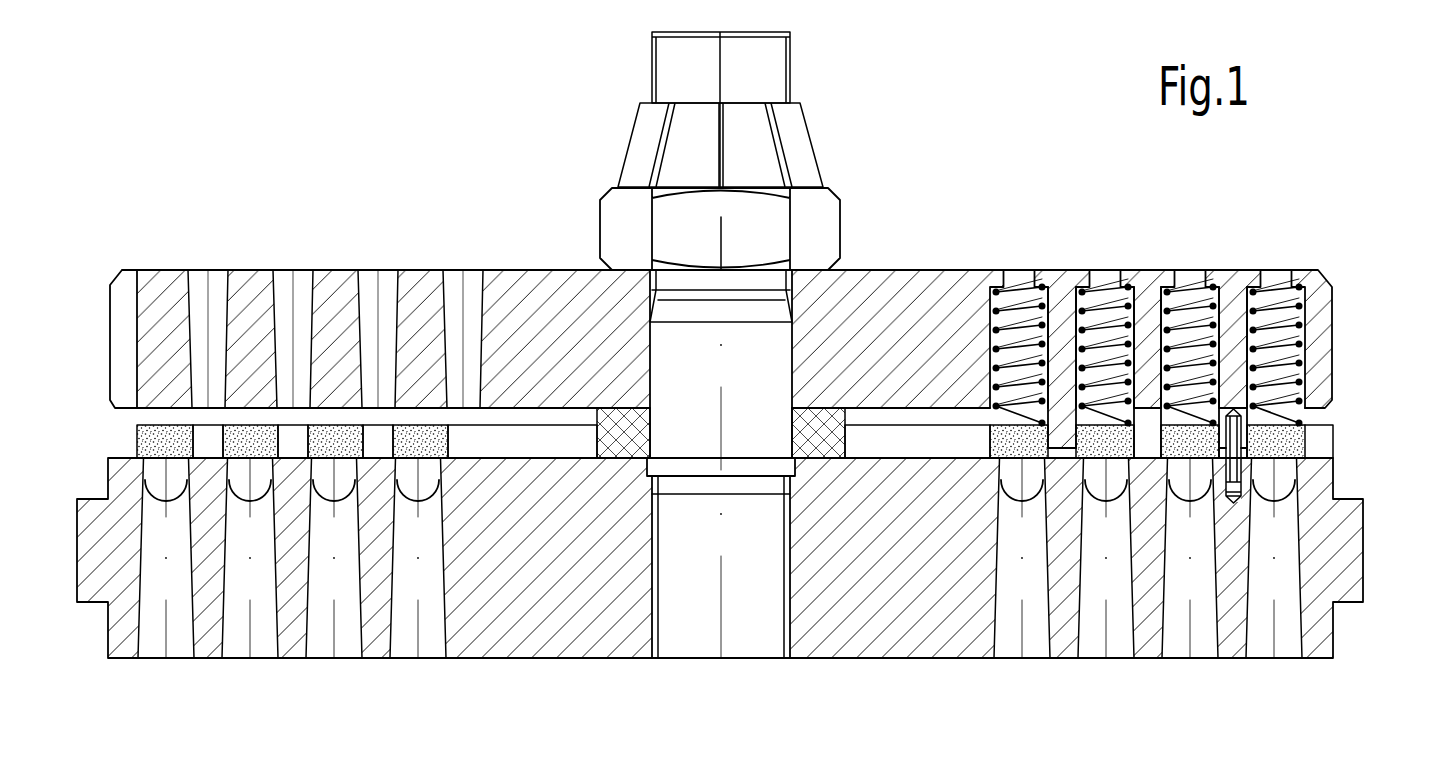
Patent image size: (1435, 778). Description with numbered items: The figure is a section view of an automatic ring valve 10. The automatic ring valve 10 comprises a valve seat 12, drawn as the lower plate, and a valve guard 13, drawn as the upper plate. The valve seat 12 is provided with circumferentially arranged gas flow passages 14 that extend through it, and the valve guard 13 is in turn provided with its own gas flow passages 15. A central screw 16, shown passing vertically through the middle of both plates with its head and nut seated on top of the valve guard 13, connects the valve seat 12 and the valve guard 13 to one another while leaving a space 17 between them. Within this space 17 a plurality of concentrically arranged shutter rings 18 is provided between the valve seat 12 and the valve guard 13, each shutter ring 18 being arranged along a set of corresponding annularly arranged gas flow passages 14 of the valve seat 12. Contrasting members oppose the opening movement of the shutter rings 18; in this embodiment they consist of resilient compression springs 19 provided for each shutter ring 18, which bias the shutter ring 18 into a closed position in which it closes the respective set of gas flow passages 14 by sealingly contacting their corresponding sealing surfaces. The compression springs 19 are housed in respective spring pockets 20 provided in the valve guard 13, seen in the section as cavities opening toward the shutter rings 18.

The automatic ring valve 10 is at (995, 210).
The valve seat 12 is at (122, 628).
The valve guard 13 is at (862, 292).
The gas flow passages 14 is at (406, 650).
The gas flow passages 15 is at (285, 285).
The central screw 16 is at (758, 88).
The space 17 is at (513, 417).
The shutter rings 18 is at (330, 438).
The compression springs 19 is at (1272, 310).
The spring pockets 20 is at (1083, 302).